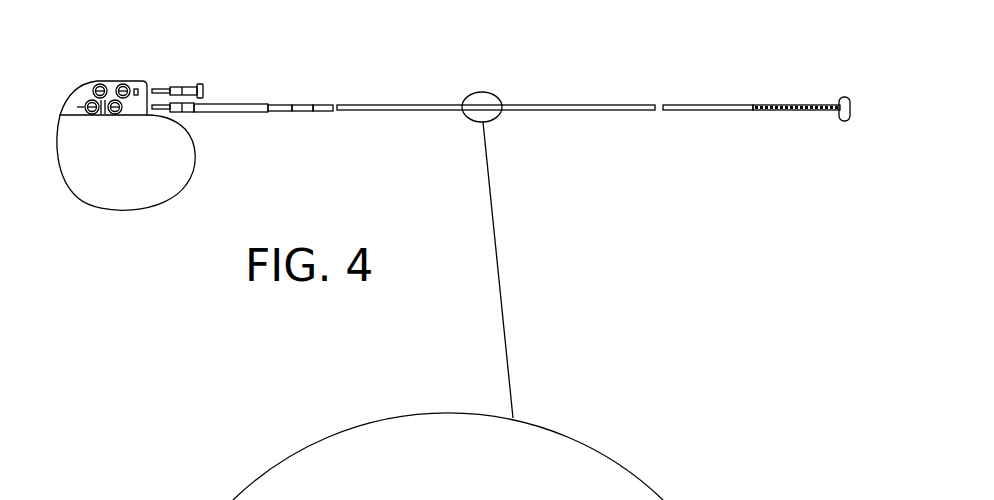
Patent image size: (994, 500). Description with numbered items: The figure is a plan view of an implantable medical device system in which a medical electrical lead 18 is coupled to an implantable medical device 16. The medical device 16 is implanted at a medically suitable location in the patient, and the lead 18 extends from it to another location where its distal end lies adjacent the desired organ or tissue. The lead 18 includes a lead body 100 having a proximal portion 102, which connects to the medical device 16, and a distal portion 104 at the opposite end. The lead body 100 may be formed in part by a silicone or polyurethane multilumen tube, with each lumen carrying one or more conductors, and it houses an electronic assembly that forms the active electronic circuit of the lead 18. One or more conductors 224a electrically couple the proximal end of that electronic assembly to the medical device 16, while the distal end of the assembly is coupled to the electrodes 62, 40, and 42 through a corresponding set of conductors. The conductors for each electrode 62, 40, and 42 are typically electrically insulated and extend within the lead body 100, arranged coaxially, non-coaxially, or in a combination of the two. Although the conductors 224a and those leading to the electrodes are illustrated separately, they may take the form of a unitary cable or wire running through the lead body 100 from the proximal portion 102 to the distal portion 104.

The medical device 16 is at (137, 193).
The lead 18 is at (518, 107).
The proximal portion 102 is at (194, 115).
The lead body 100 is at (533, 105).
The electrode 62 is at (695, 105).
The electrode 40 is at (797, 105).
The electrode 42 is at (851, 106).
The distal portion 104 is at (816, 128).
The conductors 224a is at (652, 497).